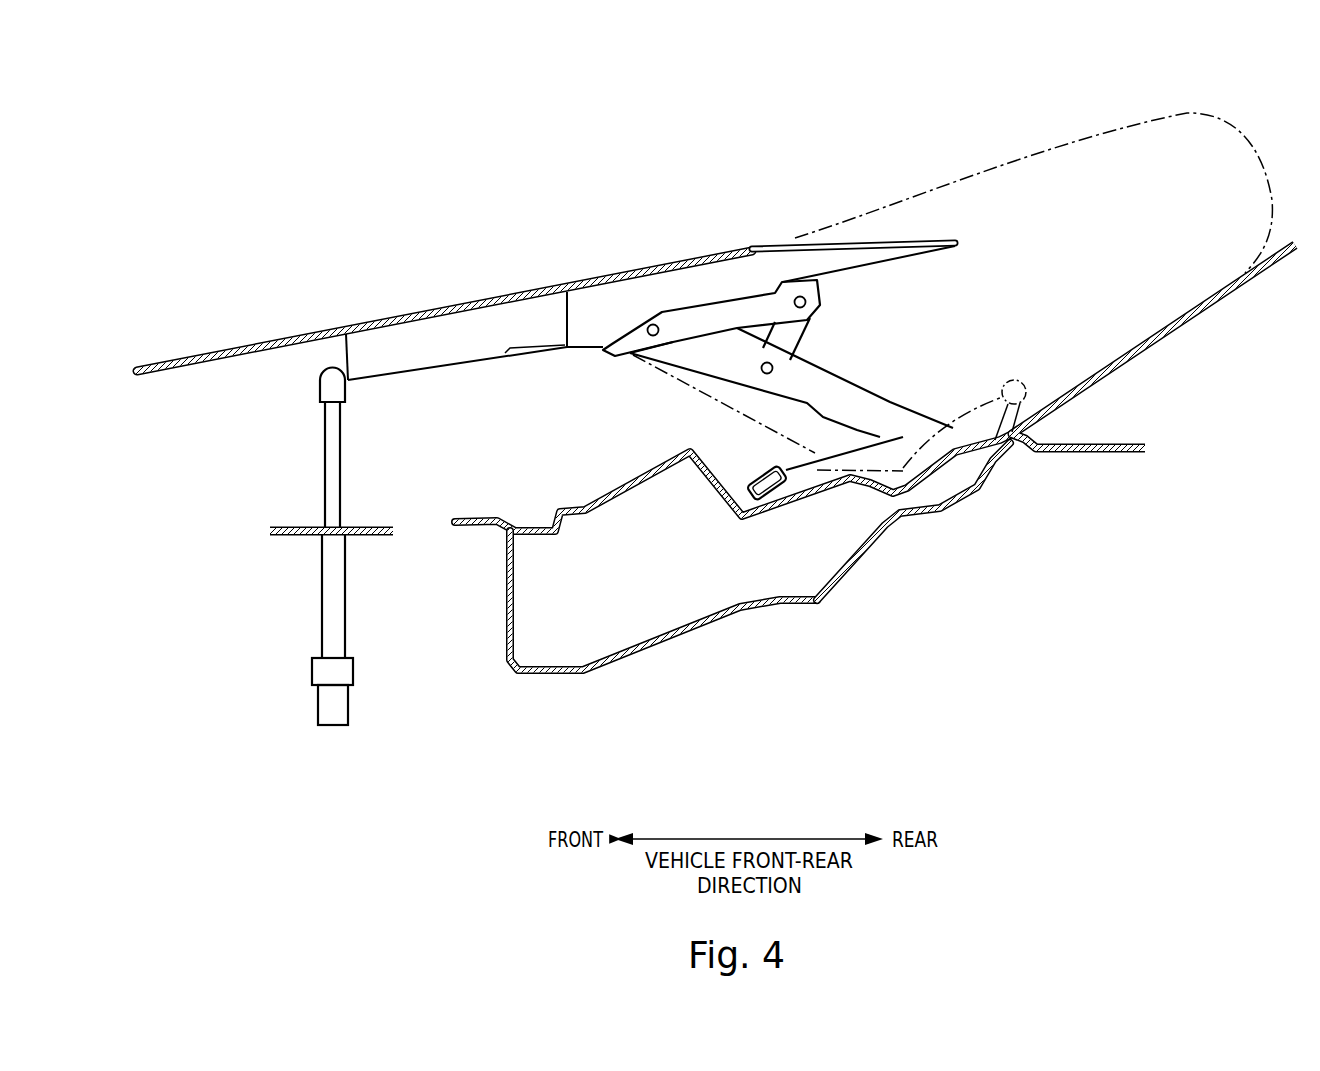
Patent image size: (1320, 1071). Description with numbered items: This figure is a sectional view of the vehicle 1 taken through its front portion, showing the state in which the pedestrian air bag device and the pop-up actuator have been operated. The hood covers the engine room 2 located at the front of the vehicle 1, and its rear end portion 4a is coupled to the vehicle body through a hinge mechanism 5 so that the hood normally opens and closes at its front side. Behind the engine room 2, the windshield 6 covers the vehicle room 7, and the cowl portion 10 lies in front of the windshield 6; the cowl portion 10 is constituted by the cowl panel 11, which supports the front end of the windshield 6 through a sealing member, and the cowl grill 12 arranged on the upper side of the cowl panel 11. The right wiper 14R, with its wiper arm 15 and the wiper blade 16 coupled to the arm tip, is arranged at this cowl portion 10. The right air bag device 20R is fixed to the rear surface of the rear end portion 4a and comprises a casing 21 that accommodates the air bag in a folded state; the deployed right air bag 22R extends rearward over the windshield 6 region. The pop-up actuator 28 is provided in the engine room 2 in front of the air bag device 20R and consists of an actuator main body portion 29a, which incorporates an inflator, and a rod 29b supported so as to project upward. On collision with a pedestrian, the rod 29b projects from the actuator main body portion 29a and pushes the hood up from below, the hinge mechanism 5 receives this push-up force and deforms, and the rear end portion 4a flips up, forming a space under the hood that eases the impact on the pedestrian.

The vehicle 1 is at (533, 162).
The engine room 2 is at (188, 586).
The rear end portion 4a is at (625, 270).
The hinge mechanism 5 is at (832, 405).
The windshield 6 is at (1190, 313).
The vehicle room 7 is at (1156, 542).
The cowl portion 10 is at (612, 620).
The cowl panel 11 is at (858, 573).
The cowl grill 12 is at (583, 510).
The right wiper 14R is at (1033, 661).
The wiper arm 15 is at (782, 480).
The wiper blade 16 is at (1004, 405).
The right air bag device 20R is at (450, 340).
The casing 21 is at (475, 345).
The right air bag 22R is at (1080, 193).
The pop-up actuator 28 is at (317, 613).
The actuator main body portion 29a is at (332, 587).
The rod 29b is at (323, 488).